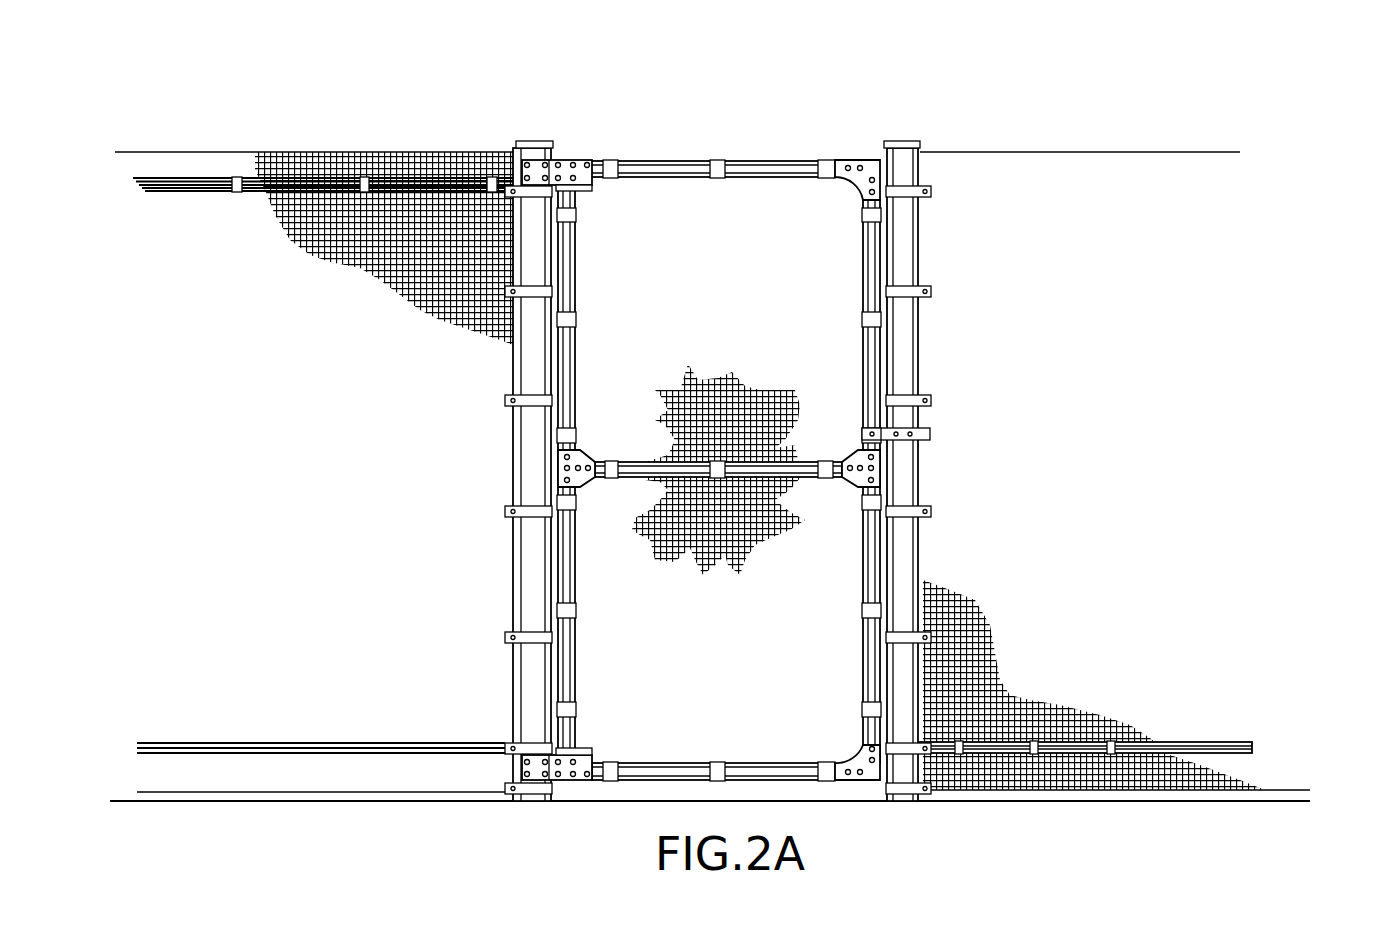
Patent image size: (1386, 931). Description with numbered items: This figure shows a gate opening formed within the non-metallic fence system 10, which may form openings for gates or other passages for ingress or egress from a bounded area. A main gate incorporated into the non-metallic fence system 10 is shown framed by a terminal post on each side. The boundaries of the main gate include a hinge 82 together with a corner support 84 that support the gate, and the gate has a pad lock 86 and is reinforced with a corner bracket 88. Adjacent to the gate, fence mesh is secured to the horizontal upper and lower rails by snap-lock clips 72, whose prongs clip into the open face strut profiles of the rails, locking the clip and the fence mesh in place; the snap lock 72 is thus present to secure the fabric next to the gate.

The non-metallic fence system 10 is at (739, 416).
The snap-lock clip 72 is at (363, 177).
The hinge 82 is at (572, 158).
The corner support 84 is at (588, 748).
The pad lock 86 is at (920, 434).
The corner bracket 88 is at (866, 160).